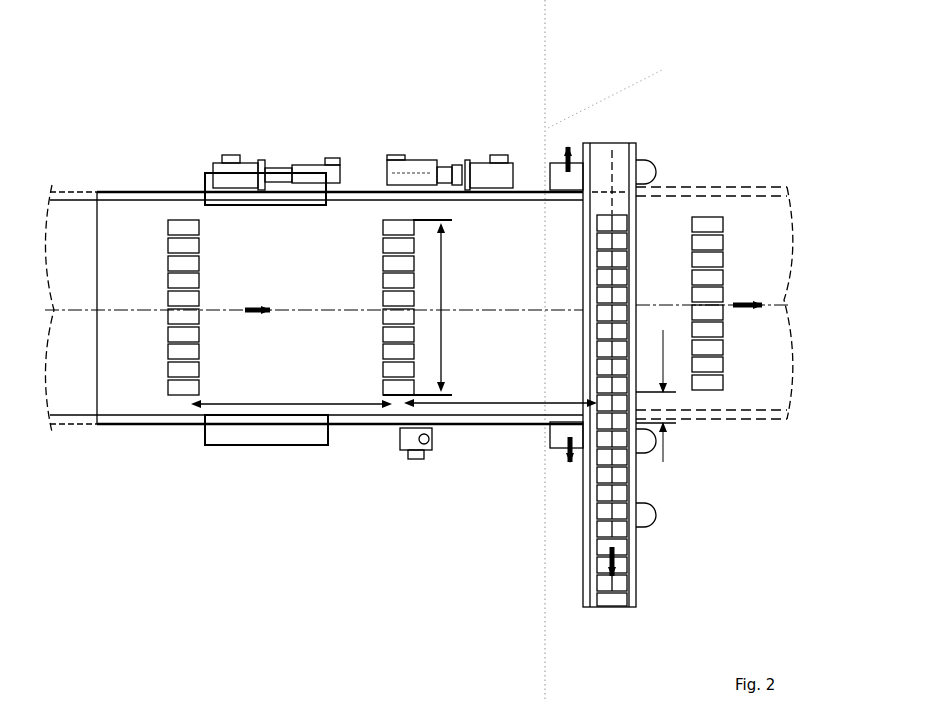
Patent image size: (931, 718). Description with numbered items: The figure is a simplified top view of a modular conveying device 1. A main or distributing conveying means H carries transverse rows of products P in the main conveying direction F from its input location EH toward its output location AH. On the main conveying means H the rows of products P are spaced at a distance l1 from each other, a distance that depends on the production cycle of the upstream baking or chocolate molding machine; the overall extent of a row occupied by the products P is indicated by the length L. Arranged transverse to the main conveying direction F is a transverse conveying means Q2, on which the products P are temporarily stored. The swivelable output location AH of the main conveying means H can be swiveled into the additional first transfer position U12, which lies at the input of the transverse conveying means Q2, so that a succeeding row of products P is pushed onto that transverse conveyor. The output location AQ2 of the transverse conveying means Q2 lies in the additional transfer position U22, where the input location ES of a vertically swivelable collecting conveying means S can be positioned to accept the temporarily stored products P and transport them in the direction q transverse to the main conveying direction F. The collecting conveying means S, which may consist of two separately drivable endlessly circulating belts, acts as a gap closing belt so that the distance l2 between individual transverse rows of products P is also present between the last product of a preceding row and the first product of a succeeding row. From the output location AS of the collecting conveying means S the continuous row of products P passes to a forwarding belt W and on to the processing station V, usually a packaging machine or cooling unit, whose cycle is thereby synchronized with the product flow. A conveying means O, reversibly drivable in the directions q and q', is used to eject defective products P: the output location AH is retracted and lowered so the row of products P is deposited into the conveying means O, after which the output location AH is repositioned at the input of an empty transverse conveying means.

The modular conveying device 1 is at (272, 98).
The main conveying means H is at (140, 220).
The input location of the main conveying means EH is at (97, 218).
The products P is at (185, 228).
The main conveying direction F is at (505, 292).
The pallet stack length L is at (420, 307).
The distance between rows of products l1 is at (394, 392).
The distance between individual transverse rows of products l2 is at (656, 396).
The processing station V is at (586, 367).
The transverse conveying means Q2 is at (607, 158).
The output location of the main conveying means AH is at (585, 250).
The additional first transfer position U12 is at (583, 328).
The additional transfer position U22 is at (603, 410).
The input location of the collecting conveying means ES is at (615, 415).
The output location of the transverse conveying means AQ2 is at (612, 410).
The collecting conveying means S is at (628, 533).
The output location of the collecting conveying means AS is at (597, 560).
The forwarding belt W is at (632, 590).
The conveying means O is at (560, 170).
The direction q' is at (587, 114).
The direction q is at (566, 517).